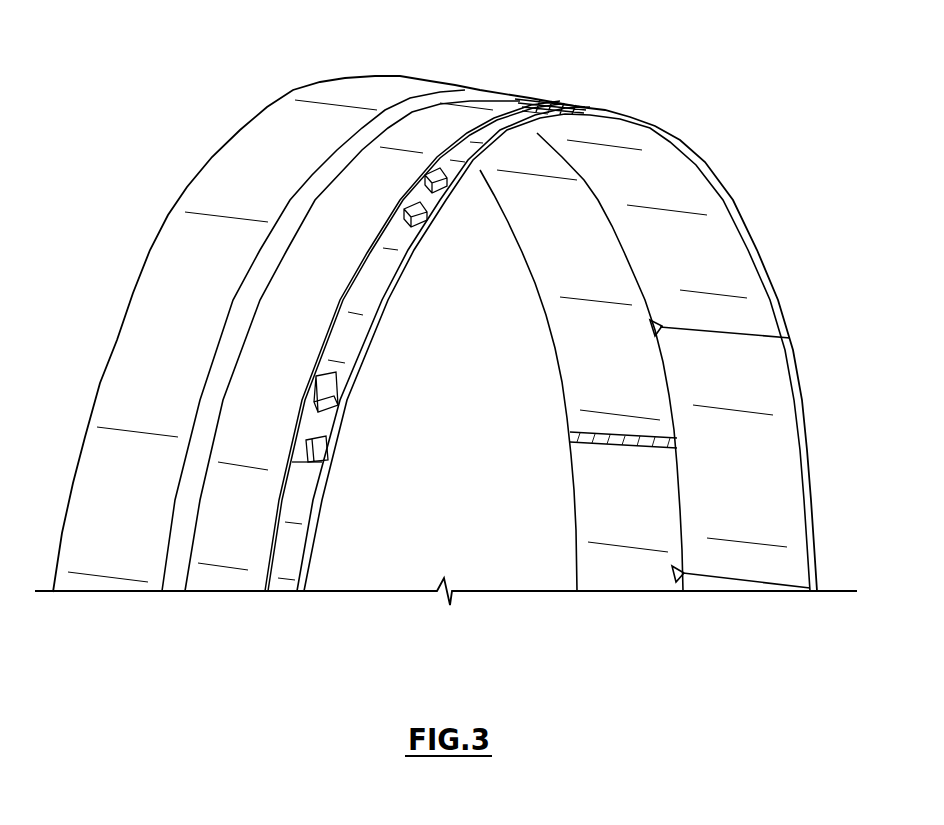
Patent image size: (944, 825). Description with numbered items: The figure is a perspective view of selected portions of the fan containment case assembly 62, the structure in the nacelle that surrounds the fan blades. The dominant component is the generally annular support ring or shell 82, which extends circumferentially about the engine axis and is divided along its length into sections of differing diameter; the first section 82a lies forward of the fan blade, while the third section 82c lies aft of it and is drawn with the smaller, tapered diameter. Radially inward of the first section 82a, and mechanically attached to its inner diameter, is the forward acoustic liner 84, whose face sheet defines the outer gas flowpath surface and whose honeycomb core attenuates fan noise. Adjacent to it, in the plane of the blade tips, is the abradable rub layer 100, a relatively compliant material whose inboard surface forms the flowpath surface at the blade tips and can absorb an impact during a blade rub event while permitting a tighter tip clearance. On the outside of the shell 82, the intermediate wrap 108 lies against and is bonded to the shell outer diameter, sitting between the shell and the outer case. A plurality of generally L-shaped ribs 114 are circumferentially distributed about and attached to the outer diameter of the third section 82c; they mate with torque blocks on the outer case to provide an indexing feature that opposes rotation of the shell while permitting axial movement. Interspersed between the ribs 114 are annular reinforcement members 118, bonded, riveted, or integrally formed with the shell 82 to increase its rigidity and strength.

The fan containment case assembly 62 is at (150, 160).
The shell 82 is at (290, 93).
The first section 82a is at (360, 88).
The third section 82c is at (322, 424).
The wrap 108 is at (500, 105).
The ribs 114 is at (410, 209).
The annular reinforcement members 118 is at (473, 150).
The forward acoustic liner 84 is at (623, 568).
The abradable rub layer 100 is at (738, 581).